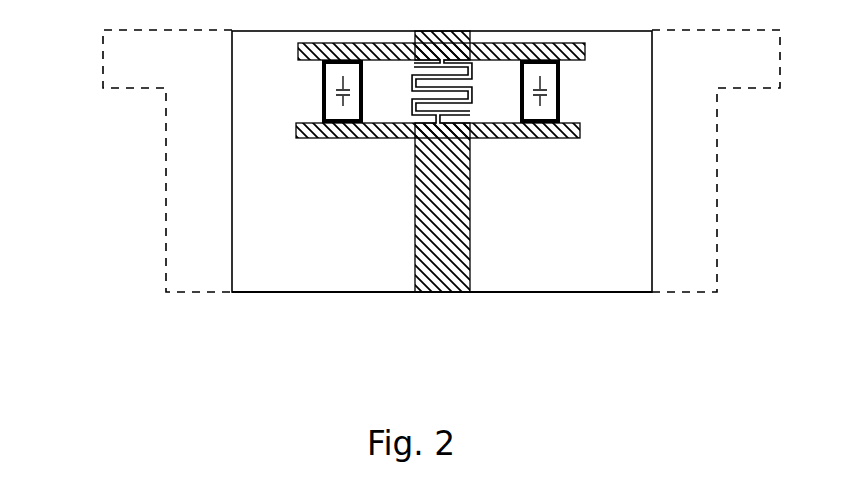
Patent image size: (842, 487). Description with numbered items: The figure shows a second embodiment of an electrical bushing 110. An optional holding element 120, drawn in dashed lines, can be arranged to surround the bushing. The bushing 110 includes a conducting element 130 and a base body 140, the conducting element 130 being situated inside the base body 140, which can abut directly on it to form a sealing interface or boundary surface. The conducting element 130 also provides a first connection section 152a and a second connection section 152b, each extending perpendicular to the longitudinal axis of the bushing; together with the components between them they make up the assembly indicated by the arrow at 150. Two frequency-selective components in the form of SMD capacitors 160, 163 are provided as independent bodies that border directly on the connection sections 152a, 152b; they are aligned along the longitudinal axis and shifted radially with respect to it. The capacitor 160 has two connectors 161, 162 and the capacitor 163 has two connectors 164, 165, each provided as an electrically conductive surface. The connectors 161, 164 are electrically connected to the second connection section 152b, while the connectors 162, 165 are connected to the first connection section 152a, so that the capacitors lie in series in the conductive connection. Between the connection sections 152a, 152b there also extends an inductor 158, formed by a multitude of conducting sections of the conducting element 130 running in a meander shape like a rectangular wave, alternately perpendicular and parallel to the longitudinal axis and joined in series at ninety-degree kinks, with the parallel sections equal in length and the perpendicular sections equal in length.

The electrical bushing 110 is at (461, 345).
The holding element 120 is at (166, 192).
The conducting element 130 is at (470, 227).
The base body 140 is at (288, 293).
The sensor assembly 150 is at (443, 146).
The first connection section 152a is at (571, 123).
The second connection section 152b is at (571, 59).
The inductor 158 is at (412, 82).
The frequency-selective component 160 is at (519, 86).
The connector 161 is at (519, 66).
The connector 162 is at (516, 112).
The frequency-selective component 163 is at (321, 86).
The connector 164 is at (321, 64).
The connector 165 is at (321, 116).